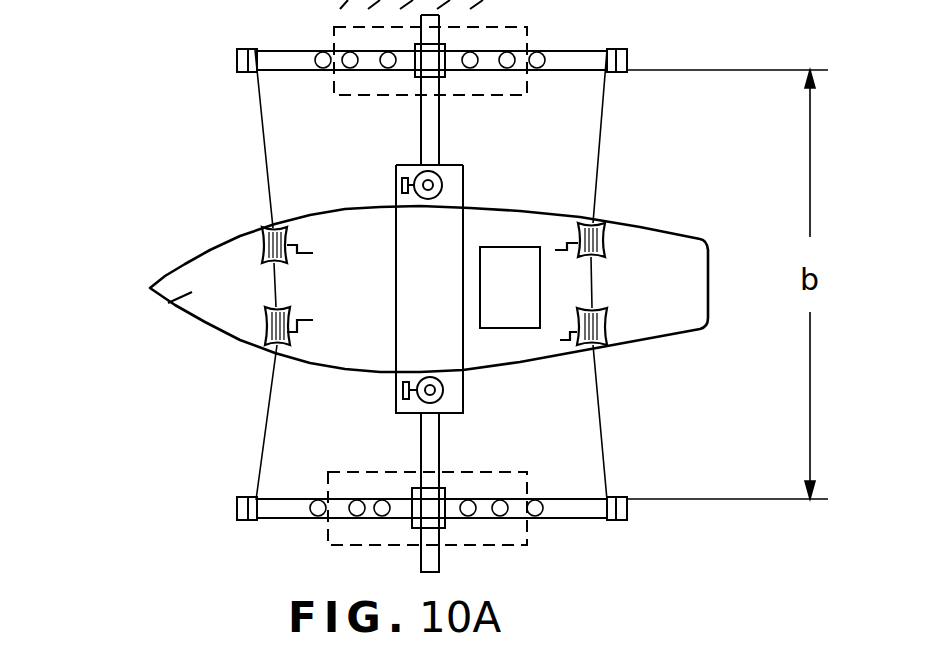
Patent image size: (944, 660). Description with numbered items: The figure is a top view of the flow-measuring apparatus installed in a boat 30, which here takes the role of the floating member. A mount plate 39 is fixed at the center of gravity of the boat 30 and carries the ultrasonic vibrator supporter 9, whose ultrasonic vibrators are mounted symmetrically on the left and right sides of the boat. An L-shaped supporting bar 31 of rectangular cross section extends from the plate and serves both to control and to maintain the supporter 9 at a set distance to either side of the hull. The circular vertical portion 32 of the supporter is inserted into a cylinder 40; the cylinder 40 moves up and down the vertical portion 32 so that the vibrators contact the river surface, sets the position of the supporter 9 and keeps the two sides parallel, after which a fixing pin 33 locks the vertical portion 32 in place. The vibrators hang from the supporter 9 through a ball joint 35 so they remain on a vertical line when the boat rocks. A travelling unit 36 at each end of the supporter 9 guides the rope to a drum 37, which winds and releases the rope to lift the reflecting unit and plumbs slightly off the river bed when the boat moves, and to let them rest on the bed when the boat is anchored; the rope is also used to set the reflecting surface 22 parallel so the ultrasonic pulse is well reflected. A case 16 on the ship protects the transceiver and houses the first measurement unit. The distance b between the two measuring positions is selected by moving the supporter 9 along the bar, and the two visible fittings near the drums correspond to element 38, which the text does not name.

The ultrasonic vibrator supporter 9 is at (575, 52).
The case 16 is at (510, 287).
The reflecting surface 22 is at (513, 545).
The boat 30 is at (168, 303).
The supporting bar 31 is at (432, 132).
The vertical portion 32 is at (418, 171).
The fixing pin 33 is at (393, 183).
The ball joint 35 is at (450, 47).
The travelling unit 36 is at (253, 47).
The drum 37 is at (262, 245).
The bracket 38 is at (300, 243).
The mount plate 39 is at (437, 268).
The cylinder 40 is at (462, 167).